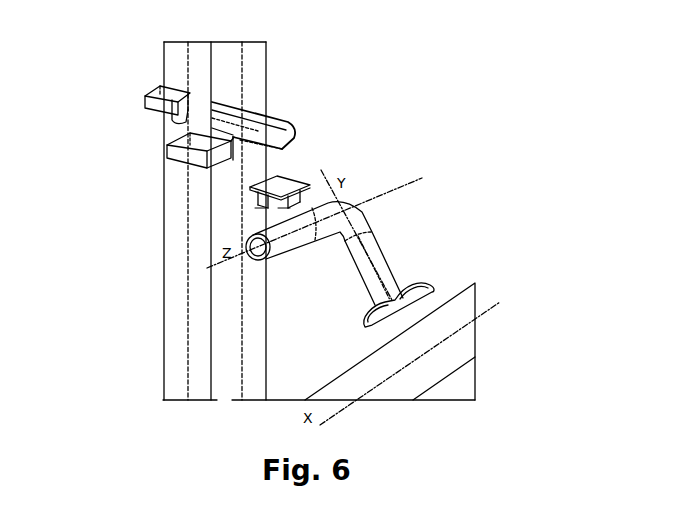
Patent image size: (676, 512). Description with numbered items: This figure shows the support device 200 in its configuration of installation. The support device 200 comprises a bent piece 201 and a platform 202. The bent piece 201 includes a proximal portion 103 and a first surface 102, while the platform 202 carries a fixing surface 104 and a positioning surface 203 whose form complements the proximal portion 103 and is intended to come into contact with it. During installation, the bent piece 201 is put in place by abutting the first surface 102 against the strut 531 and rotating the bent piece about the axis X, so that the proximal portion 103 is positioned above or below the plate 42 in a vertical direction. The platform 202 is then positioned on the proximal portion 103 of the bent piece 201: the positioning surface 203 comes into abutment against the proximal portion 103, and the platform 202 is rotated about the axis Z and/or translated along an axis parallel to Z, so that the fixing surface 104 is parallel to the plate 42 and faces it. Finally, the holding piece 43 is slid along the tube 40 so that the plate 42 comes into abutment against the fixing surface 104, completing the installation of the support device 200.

The tube 40 is at (261, 335).
The plate 42 is at (299, 131).
The holding piece 43 is at (144, 97).
The first surface 102 is at (366, 314).
The proximal portion 103 is at (407, 306).
The fixing surface 104 is at (291, 179).
The support device 200 is at (471, 88).
The bent piece 201 is at (385, 193).
The platform 202 is at (322, 172).
The positioning surface 203 is at (283, 208).
The strut 531 is at (455, 370).